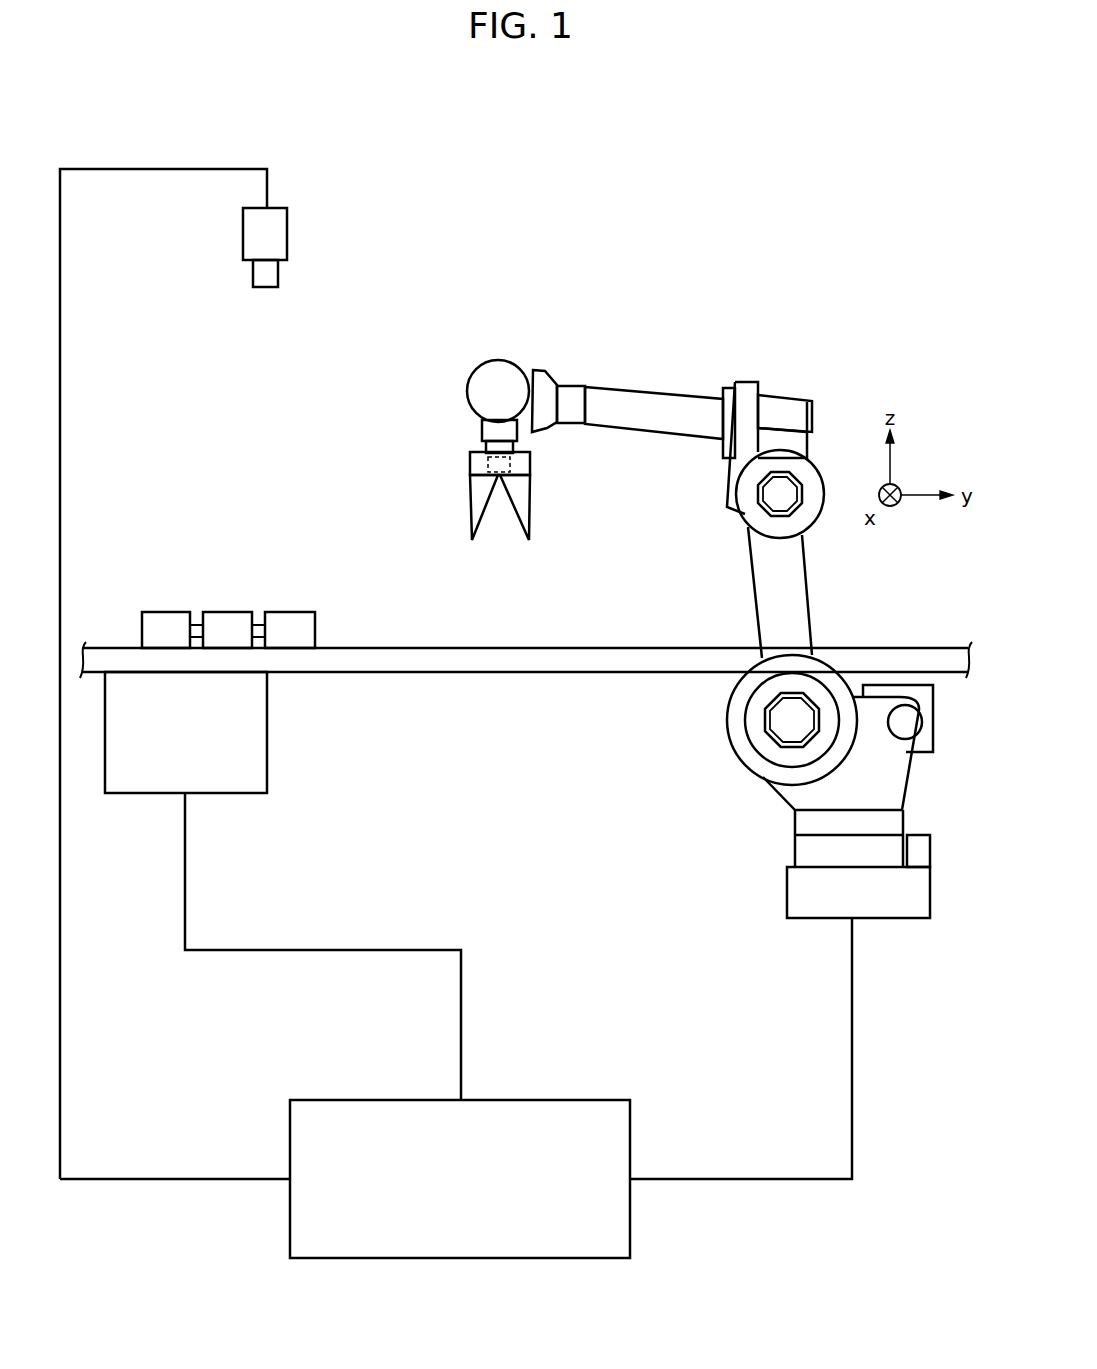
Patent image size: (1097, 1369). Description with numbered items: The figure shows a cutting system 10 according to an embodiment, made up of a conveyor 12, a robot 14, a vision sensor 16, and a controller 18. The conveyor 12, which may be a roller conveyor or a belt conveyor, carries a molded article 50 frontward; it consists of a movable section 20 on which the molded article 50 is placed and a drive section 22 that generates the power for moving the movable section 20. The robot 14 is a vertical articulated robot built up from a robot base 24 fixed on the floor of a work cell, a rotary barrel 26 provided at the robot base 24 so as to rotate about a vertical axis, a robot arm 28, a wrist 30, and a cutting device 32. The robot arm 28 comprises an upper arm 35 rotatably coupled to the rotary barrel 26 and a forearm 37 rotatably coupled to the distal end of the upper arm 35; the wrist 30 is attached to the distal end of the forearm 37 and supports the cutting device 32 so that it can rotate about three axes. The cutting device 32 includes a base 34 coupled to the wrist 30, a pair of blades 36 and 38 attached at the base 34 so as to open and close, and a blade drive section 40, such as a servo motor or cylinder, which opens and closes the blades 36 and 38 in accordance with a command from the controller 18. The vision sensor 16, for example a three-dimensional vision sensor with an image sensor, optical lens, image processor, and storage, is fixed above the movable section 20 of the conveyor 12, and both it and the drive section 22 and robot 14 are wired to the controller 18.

The cutting system 10 is at (895, 107).
The conveyor 12 is at (526, 741).
The robot 14 is at (818, 262).
The vision sensor 16 is at (278, 237).
The controller 18 is at (630, 1229).
The movable section 20 is at (373, 660).
The drive section 22 is at (240, 723).
The robot base 24 is at (807, 895).
The rotary barrel 26 is at (893, 770).
The robot arm 28 is at (703, 317).
The wrist 30 is at (485, 378).
The cutting device 32 is at (596, 507).
The base 34 is at (470, 462).
The upper arm 35 is at (790, 585).
The blade 36 is at (482, 495).
The forearm 37 is at (635, 407).
The blade 38 is at (525, 505).
The blade drive section 40 is at (530, 460).
The molded article 50 is at (168, 602).